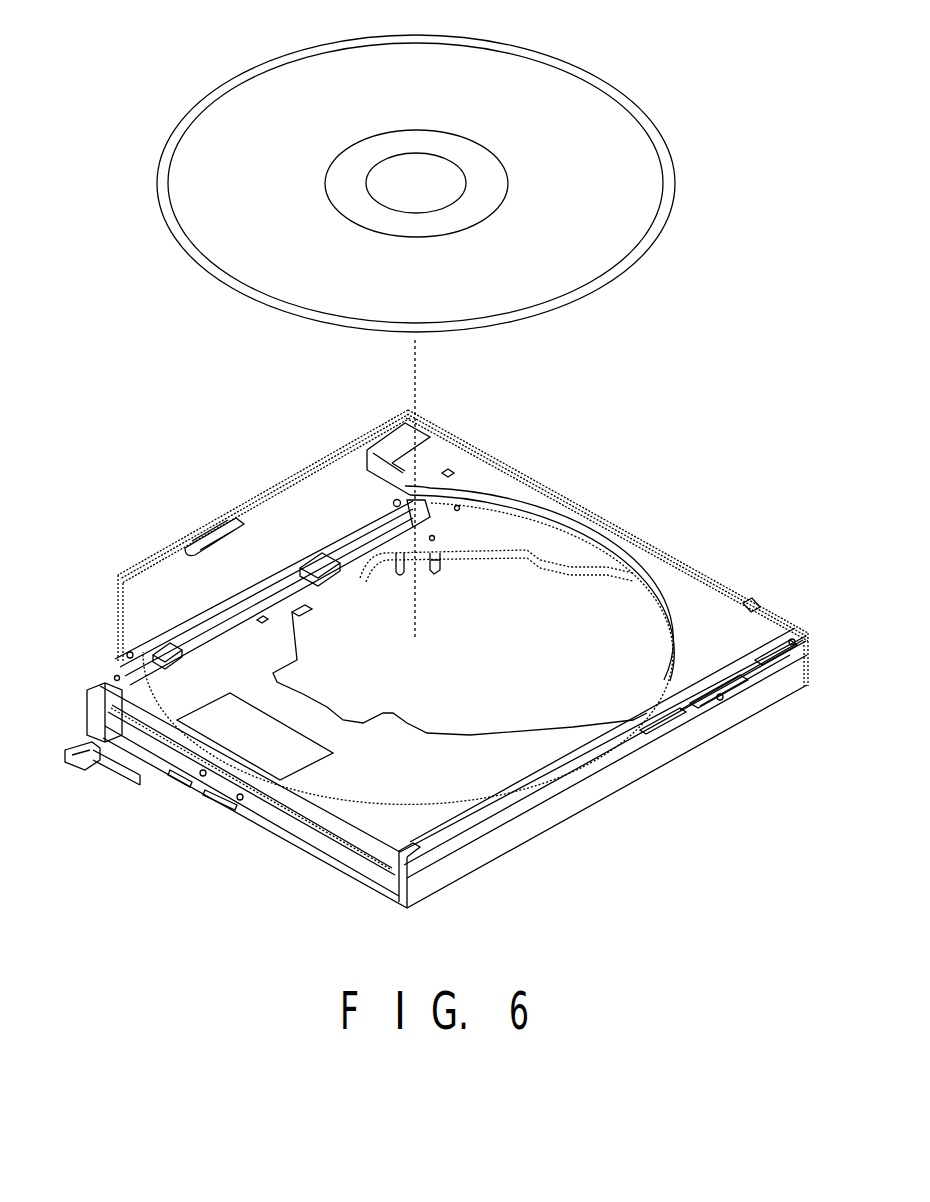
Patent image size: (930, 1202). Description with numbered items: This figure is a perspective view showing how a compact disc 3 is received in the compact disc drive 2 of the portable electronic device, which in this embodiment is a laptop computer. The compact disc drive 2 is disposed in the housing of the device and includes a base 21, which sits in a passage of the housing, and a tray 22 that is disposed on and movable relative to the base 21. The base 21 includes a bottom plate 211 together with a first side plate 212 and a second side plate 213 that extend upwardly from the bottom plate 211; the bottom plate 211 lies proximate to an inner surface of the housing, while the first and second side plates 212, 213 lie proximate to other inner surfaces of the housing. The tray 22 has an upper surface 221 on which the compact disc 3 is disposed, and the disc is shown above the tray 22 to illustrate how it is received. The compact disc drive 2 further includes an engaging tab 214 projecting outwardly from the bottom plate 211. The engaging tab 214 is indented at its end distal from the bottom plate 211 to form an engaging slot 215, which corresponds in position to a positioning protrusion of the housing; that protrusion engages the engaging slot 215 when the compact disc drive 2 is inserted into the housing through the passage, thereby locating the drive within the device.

The compact disc drive 2 is at (688, 455).
The compact disc 3 is at (243, 102).
The base 21 is at (615, 812).
The tray 22 is at (555, 478).
The bottom plate 211 is at (343, 513).
The first side plate 212 is at (200, 545).
The second side plate 213 is at (718, 710).
The engaging tab 214 is at (110, 748).
The engaging slot 215 is at (78, 762).
The upper surface 221 is at (425, 792).